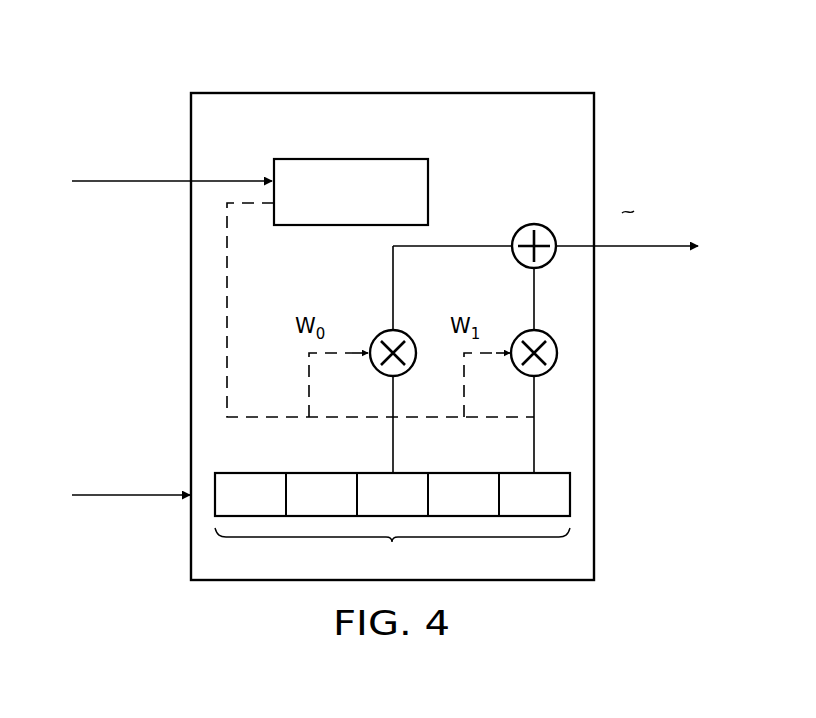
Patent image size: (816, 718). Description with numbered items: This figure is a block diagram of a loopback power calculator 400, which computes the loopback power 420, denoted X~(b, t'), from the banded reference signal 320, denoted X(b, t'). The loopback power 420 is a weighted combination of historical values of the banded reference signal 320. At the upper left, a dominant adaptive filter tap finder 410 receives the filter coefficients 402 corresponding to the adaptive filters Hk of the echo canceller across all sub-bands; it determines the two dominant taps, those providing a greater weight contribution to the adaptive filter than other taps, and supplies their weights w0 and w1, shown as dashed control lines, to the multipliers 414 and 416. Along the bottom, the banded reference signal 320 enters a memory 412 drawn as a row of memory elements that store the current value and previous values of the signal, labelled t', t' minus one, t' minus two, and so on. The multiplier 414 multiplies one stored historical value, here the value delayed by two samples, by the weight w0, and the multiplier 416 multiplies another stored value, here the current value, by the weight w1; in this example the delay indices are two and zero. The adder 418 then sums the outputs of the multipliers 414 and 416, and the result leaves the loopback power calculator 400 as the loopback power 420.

The loopback power calculator 400 is at (511, 93).
The filter coefficients 402 is at (97, 180).
The dominant adaptive filter tap finder 410 is at (344, 159).
The memory 412 is at (392, 525).
The multiplier 414 is at (379, 333).
The multiplier 416 is at (546, 333).
The adder 418 is at (546, 226).
The loopback power 420 is at (652, 250).
The banded reference signal 320 is at (130, 497).